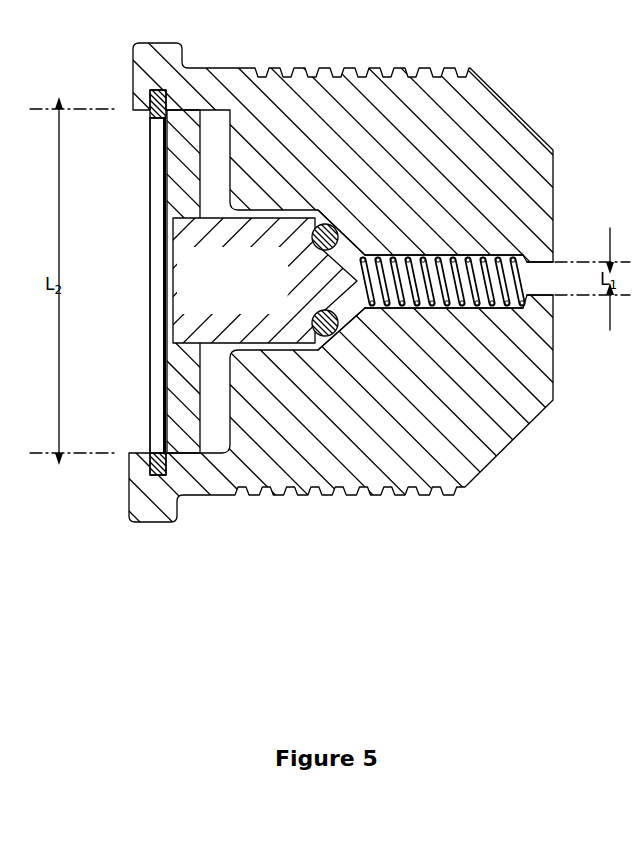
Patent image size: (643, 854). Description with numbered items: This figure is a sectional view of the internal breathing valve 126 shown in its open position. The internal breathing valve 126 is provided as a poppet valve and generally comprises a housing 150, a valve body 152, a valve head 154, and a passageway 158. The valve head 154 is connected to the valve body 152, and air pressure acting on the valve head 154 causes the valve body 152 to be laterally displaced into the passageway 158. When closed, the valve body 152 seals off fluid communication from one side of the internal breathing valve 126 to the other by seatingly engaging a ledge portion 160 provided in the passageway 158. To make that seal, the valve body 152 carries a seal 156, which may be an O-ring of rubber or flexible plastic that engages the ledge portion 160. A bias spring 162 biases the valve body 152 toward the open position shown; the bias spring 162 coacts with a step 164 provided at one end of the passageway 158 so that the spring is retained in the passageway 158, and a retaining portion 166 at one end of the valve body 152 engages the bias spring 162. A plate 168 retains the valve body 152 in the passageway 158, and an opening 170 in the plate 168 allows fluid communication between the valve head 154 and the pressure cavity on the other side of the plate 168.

The internal breathing valve 126 is at (528, 113).
The housing 150 is at (345, 541).
The valve body 152 is at (283, 249).
The valve head 154 is at (188, 191).
The seal 156 is at (302, 251).
The passageway 158 is at (525, 258).
The ledge portion 160 is at (355, 316).
The bias spring 162 is at (460, 314).
The step 164 is at (524, 296).
The retaining portion 166 is at (354, 247).
The plate 168 is at (155, 153).
The opening 170 is at (147, 294).